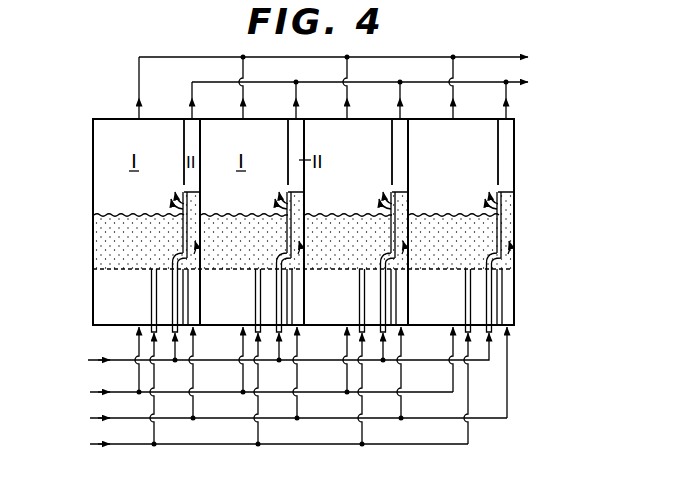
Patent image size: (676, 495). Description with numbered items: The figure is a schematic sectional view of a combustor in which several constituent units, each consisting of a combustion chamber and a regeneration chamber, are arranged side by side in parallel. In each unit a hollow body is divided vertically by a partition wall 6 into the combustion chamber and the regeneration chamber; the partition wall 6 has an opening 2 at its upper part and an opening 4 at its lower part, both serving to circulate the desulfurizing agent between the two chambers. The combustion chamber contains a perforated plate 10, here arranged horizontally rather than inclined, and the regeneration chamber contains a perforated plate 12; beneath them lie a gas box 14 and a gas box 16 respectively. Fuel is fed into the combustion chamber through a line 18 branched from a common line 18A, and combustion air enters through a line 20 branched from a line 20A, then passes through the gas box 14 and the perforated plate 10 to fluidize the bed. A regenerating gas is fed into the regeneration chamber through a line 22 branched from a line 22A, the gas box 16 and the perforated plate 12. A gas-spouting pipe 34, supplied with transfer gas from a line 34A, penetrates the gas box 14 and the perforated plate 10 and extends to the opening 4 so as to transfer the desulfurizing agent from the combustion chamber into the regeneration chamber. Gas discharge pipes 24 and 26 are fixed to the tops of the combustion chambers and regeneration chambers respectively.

The opening 2 is at (183, 189).
The opening 4 is at (180, 247).
The partition wall 6 is at (182, 140).
The perforated plate 10 is at (108, 272).
The perforated plate 12 is at (192, 273).
The gas box 14 is at (100, 308).
The gas box 16 is at (177, 309).
The line 18 is at (154, 373).
The line 18A is at (91, 443).
The line 20 is at (138, 353).
The line 20A is at (91, 391).
The line 22 is at (194, 397).
The line 22A is at (91, 417).
The gas discharge pipe 24 is at (492, 57).
The gas discharge pipe 26 is at (516, 85).
The gas-spouting pipe 34 is at (193, 331).
The line 34A is at (91, 359).